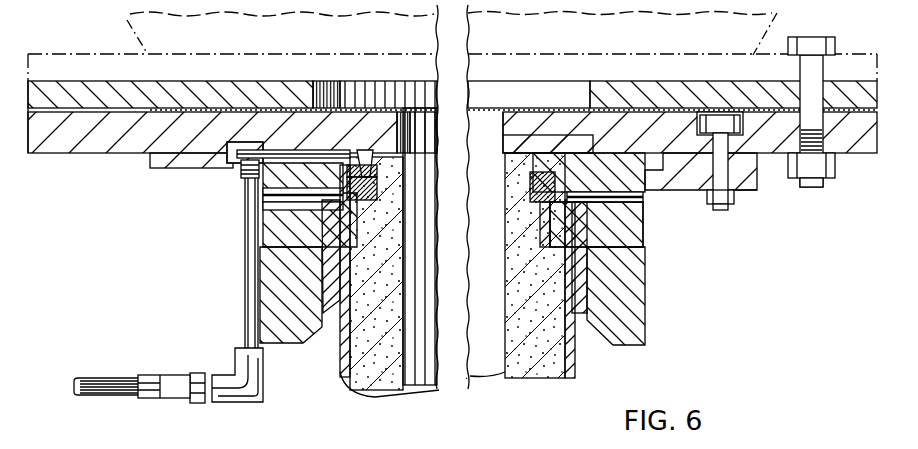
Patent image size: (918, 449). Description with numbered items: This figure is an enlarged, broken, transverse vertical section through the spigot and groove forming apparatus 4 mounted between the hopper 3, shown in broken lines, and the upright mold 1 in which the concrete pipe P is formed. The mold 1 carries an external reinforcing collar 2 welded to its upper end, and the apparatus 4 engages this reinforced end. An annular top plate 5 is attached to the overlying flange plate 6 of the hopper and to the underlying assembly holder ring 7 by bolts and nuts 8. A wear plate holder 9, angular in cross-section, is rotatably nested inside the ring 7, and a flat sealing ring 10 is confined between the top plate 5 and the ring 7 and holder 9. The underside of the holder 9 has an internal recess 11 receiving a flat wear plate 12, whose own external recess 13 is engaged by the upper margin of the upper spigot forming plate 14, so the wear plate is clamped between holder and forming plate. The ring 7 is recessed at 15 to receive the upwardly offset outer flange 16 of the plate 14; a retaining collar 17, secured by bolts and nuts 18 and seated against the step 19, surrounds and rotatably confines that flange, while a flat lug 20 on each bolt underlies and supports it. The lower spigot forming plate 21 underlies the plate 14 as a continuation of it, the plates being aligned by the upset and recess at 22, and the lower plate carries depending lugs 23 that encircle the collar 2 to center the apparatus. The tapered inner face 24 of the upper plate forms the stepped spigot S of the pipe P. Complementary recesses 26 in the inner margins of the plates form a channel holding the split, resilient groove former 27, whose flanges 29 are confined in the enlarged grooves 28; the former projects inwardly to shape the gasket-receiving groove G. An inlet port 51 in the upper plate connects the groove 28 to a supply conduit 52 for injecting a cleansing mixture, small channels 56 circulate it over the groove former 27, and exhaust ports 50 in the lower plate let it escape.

The mold 1 is at (573, 368).
The external reinforcing collar 2 is at (327, 320).
The hopper 3 is at (130, 12).
The apparatus 4 is at (33, 153).
The top plate 5 is at (100, 88).
The flange plate 6 is at (196, 68).
The assembly holder ring 7 is at (87, 153).
The bolts and nuts 8 is at (833, 37).
The wear plate holder 9 is at (513, 121).
The sealing ring 10 is at (214, 107).
The internal annular recess 11 is at (542, 110).
The wear plate 12 is at (507, 142).
The external recess 13 is at (512, 160).
The upper spigot forming plate 14 is at (645, 190).
The internal recess 15 is at (680, 150).
The outer peripheral flange 16 is at (658, 150).
The retaining collar 17 is at (149, 167).
The bolts and nuts 18 is at (733, 203).
The step 19 is at (192, 157).
The flat lug 20 is at (757, 192).
The lower spigot forming plate 21 is at (645, 237).
The upset and recess 22 is at (645, 200).
The lugs 23 is at (647, 340).
The inner face 24 is at (402, 168).
The internal recesses 26 is at (368, 165).
The groove former 27 is at (400, 188).
The annular grooves 28 is at (567, 183).
The annular flanges 29 is at (557, 153).
The exhaust ports 50 is at (286, 208).
The inlet port 51 is at (283, 150).
The supply conduit 52 is at (244, 320).
The annular channels 56 is at (345, 170).
The gasket-receiving groove G is at (512, 190).
The spigot S is at (520, 230).
The pipe P is at (380, 395).